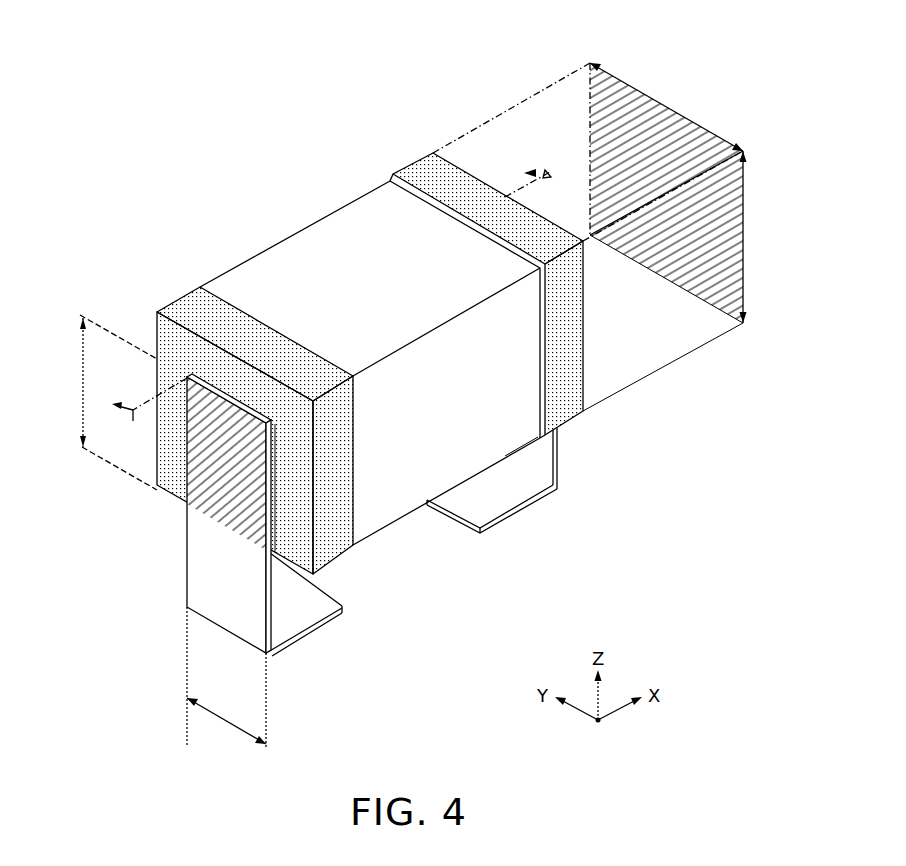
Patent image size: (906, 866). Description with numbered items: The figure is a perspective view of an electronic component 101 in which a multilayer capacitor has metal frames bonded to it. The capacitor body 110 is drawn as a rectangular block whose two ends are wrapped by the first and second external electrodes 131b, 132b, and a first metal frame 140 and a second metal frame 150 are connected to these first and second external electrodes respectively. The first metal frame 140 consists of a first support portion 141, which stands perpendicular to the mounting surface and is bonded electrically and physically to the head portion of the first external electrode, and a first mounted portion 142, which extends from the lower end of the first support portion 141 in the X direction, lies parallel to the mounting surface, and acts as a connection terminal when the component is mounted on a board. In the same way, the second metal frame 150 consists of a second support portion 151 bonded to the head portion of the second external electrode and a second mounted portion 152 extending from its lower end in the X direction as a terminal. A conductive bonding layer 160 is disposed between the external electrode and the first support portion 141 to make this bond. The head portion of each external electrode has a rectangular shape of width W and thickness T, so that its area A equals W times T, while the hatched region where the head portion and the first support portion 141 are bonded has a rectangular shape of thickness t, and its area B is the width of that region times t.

The electronic component 101 is at (209, 102).
The body 110 is at (302, 250).
The first external electrode 131b is at (188, 300).
The second external electrode 132b is at (418, 172).
The first metal frame 140 is at (287, 551).
The first support portion 141 is at (236, 608).
The first mounted portion 142 is at (298, 606).
The second metal frame 150 is at (541, 487).
The second support portion 151 is at (539, 458).
The second mounted portion 152 is at (503, 493).
The conductive bonding layer 160 is at (272, 507).
The area of head portion A is at (670, 140).
The area of bonded region B is at (212, 482).
The width of head portion W is at (631, 86).
The thickness of head portion T is at (744, 236).
The thickness of bonded region t is at (83, 418).